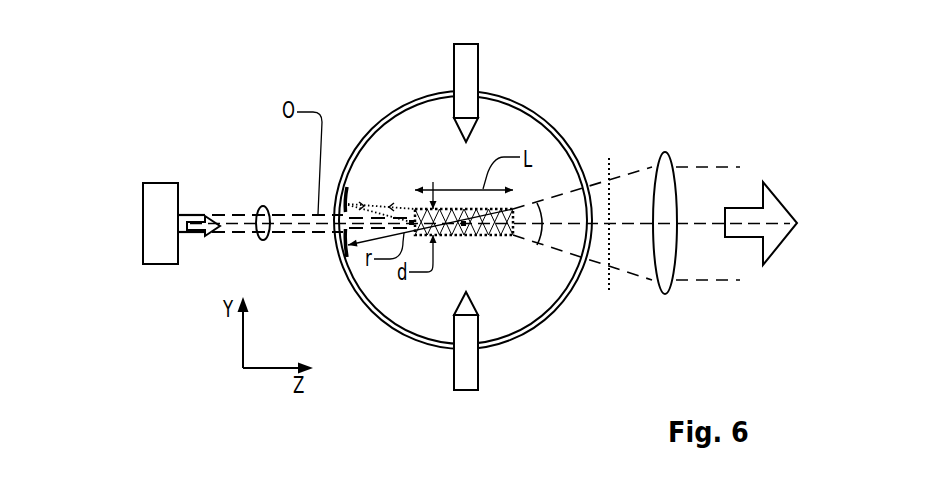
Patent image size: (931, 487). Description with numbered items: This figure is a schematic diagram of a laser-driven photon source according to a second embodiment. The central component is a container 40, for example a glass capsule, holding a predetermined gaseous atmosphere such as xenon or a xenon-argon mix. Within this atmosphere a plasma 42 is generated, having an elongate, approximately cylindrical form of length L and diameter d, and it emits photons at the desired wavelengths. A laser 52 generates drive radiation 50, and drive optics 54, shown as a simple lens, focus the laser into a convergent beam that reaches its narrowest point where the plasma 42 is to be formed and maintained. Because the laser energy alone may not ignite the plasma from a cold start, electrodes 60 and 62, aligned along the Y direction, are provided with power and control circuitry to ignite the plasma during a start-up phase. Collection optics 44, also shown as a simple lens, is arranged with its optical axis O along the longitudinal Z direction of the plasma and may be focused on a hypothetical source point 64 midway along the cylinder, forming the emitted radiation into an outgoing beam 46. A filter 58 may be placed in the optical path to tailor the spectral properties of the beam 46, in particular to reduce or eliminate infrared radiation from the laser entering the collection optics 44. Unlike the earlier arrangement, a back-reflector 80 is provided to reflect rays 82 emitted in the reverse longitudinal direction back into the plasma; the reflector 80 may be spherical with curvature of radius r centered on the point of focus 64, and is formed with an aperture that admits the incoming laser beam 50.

The container 40 is at (547, 121).
The plasma 42 is at (493, 237).
The collection optics 44 is at (667, 155).
The beam 46 is at (750, 208).
The drive radiation 50 is at (193, 233).
The laser 52 is at (182, 184).
The drive optics 54 is at (263, 206).
The filter components 58 is at (611, 284).
The electrode 60 is at (478, 75).
The electrode 62 is at (479, 369).
The source point 64 is at (463, 227).
The back-reflector 80 is at (348, 188).
The rays 82 is at (368, 198).